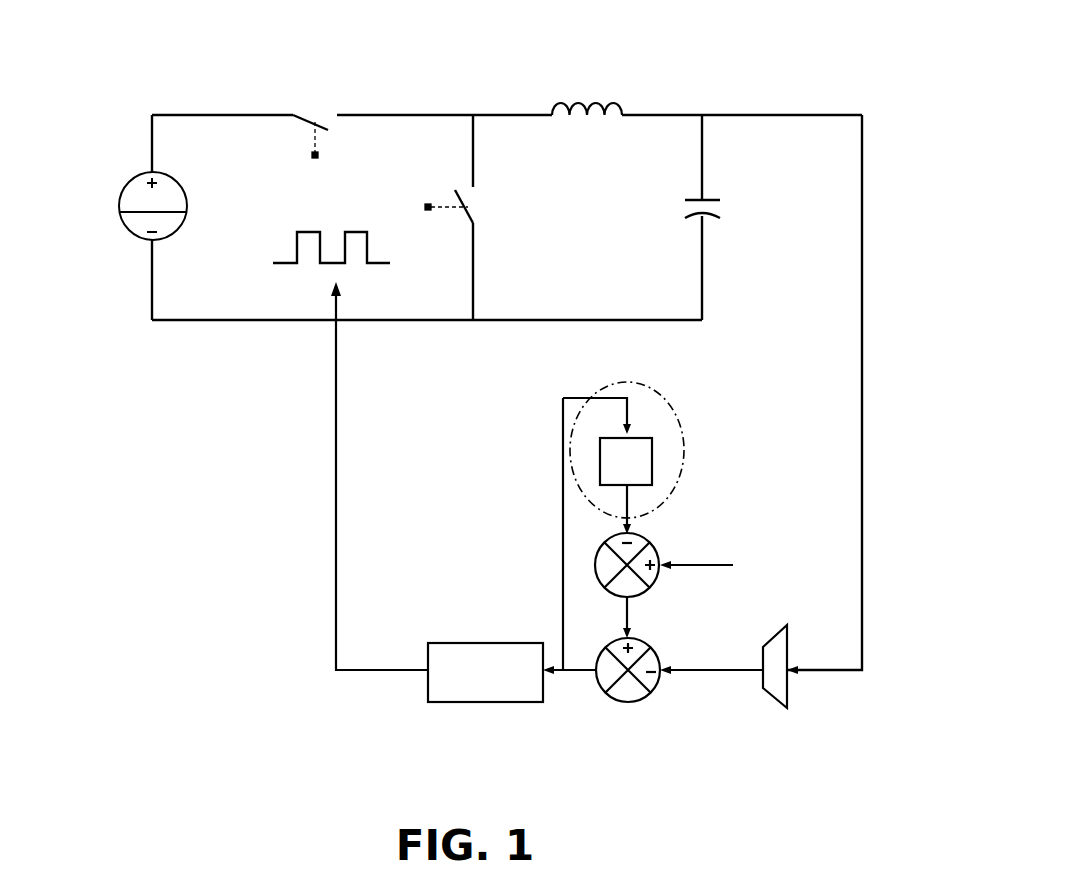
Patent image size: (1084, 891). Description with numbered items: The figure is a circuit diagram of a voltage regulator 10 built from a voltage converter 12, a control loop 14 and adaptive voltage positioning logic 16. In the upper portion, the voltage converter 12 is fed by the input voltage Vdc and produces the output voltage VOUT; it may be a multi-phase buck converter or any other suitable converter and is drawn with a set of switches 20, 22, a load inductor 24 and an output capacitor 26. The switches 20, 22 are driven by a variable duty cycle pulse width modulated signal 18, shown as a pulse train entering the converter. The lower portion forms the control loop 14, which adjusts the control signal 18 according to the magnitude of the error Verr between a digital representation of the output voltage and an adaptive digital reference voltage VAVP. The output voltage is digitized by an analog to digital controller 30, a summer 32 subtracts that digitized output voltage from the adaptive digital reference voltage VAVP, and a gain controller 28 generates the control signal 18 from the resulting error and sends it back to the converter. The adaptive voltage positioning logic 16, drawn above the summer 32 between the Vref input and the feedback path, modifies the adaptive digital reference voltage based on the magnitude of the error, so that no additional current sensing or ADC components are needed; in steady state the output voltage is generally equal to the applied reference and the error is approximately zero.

The voltage regulator 10 is at (446, 21).
The voltage converter 12 is at (288, 378).
The control loop 14 is at (452, 758).
The adaptive voltage positioning logic 16 is at (678, 478).
The pulse width modulated signal 18 is at (365, 296).
The switch 20 is at (312, 127).
The switch 22 is at (467, 222).
The load inductor 24 is at (588, 145).
The output capacitor 26 is at (668, 214).
The gain controller 28 is at (480, 643).
The analog to digital controller 30 is at (778, 710).
The summer 32 is at (623, 702).